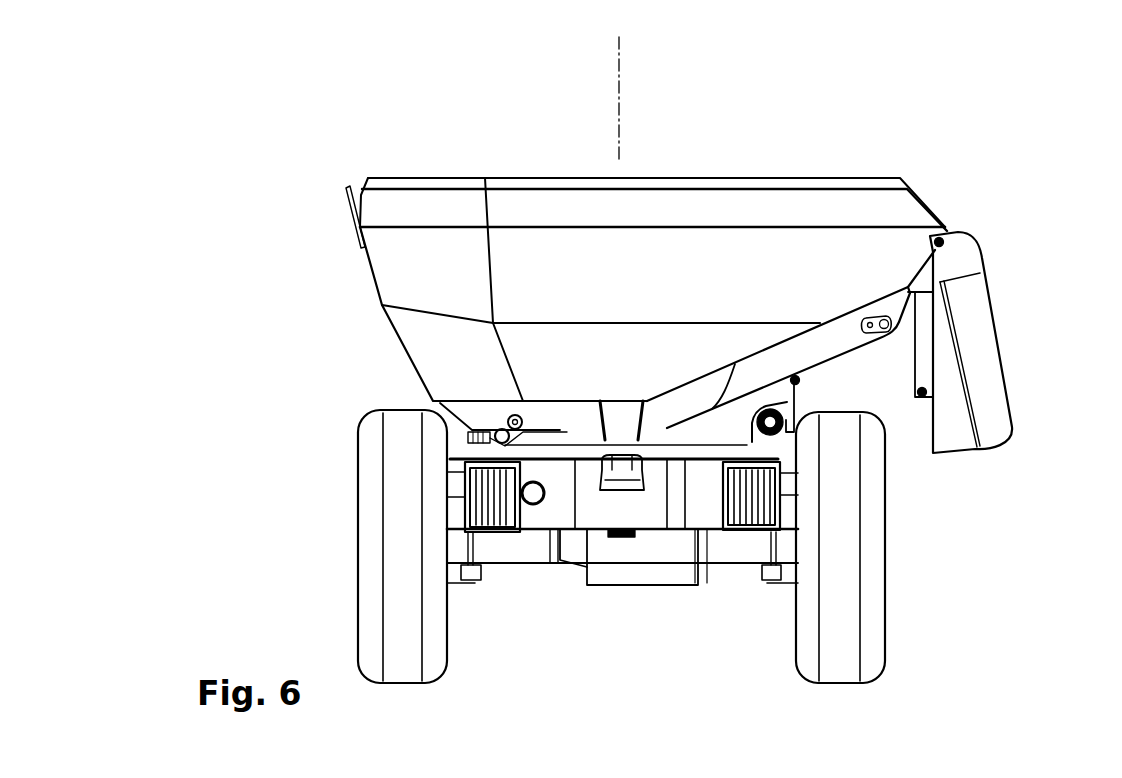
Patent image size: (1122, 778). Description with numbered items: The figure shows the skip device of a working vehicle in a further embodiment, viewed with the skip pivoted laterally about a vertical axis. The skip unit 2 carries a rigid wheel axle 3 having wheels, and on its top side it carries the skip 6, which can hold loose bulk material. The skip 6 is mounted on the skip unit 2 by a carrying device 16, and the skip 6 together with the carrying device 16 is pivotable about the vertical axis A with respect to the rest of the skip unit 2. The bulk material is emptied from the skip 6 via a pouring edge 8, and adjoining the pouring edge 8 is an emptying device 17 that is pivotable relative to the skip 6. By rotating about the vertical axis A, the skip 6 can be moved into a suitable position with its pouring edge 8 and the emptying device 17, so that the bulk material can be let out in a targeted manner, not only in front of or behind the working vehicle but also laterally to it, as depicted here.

The skip unit 2 is at (723, 375).
The rigid wheel axle 3 is at (870, 603).
The skip 6 is at (800, 208).
The pouring edge 8 is at (947, 228).
The carrying device 16 is at (702, 432).
The emptying device 17 is at (998, 427).
The vertical axis A is at (619, 108).